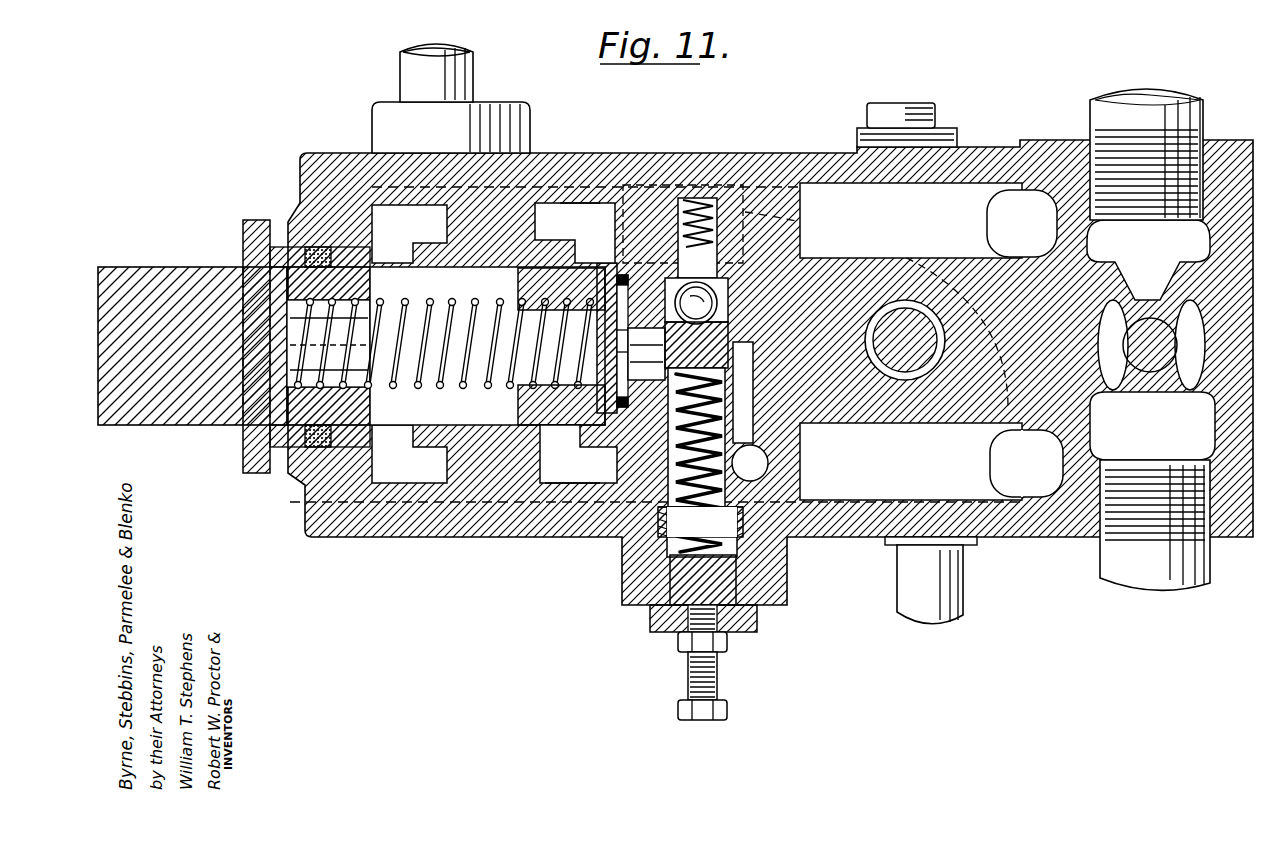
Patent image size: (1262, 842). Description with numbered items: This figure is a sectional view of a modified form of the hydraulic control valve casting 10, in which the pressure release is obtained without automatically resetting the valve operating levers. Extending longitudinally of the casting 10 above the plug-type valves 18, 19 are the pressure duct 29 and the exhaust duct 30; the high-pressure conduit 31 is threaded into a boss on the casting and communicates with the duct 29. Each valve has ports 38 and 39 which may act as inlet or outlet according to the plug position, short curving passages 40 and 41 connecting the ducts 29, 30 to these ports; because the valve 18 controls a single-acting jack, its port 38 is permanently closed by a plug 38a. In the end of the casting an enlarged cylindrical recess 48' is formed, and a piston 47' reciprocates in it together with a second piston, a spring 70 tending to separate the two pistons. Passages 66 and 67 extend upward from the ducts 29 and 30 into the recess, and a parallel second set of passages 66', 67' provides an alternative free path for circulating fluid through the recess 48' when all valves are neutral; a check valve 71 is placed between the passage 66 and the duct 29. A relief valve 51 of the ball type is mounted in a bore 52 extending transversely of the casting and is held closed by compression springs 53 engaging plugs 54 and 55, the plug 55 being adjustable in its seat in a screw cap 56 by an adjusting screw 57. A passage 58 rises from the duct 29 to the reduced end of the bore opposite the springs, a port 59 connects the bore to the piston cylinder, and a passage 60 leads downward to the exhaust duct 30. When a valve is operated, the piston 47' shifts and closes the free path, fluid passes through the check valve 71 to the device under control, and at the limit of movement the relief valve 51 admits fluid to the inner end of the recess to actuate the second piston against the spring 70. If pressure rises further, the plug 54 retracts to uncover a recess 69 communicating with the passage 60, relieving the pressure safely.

The casting 10 is at (472, 537).
The valve 18 is at (905, 300).
The valve 19 is at (1150, 375).
The pressure duct 29 is at (828, 185).
The exhaust duct 30 is at (848, 542).
The conduit 31 is at (478, 82).
The port 38 is at (1140, 172).
The plug 38a is at (885, 126).
The port 39 is at (1085, 540).
The curving passage 40 is at (858, 246).
The curving passage 41 is at (1110, 440).
The piston 47' is at (192, 328).
The cylindrical recess 48' is at (303, 362).
The relief valve 51 is at (575, 233).
The bore 52 is at (632, 510).
The compression spring 53 is at (668, 556).
The plug 54 is at (755, 385).
The plug 55 is at (760, 605).
The screw cap 56 is at (658, 633).
The adjusting screw 57 is at (718, 672).
The passage 58 is at (700, 198).
The port 59 is at (585, 421).
The passage 60 is at (770, 472).
The passage 66 is at (581, 154).
The passage 66' is at (384, 189).
The passage 67 is at (563, 527).
The passage 67' is at (406, 496).
The recess 69 is at (768, 463).
The spring 70 is at (500, 385).
The check valve 71 is at (688, 282).